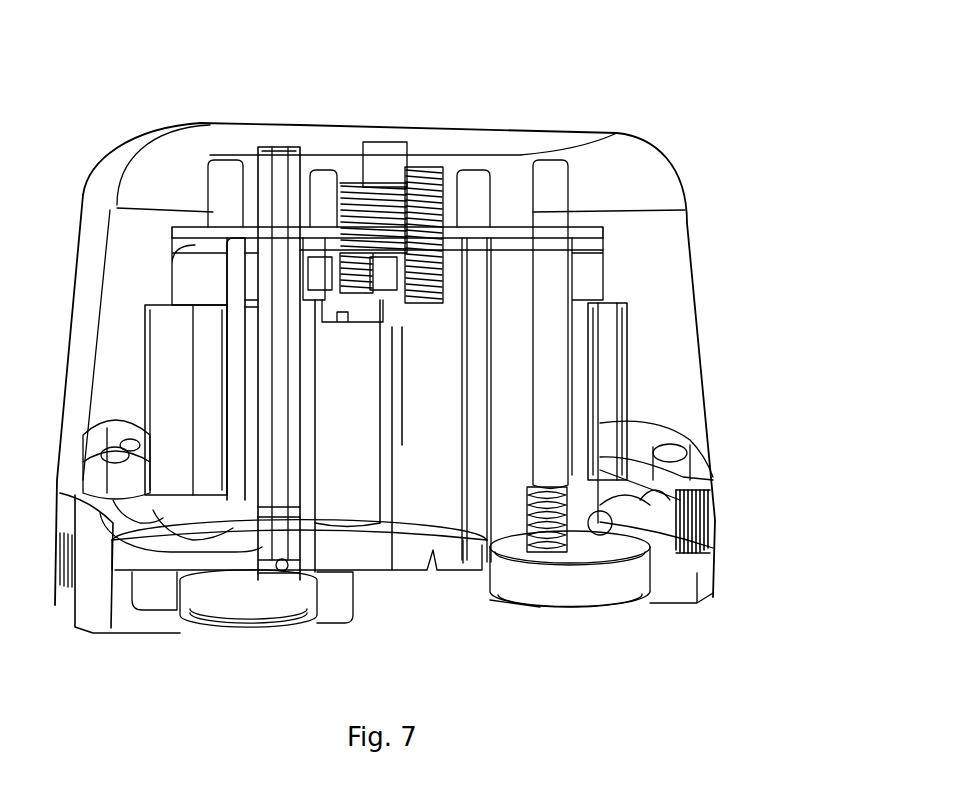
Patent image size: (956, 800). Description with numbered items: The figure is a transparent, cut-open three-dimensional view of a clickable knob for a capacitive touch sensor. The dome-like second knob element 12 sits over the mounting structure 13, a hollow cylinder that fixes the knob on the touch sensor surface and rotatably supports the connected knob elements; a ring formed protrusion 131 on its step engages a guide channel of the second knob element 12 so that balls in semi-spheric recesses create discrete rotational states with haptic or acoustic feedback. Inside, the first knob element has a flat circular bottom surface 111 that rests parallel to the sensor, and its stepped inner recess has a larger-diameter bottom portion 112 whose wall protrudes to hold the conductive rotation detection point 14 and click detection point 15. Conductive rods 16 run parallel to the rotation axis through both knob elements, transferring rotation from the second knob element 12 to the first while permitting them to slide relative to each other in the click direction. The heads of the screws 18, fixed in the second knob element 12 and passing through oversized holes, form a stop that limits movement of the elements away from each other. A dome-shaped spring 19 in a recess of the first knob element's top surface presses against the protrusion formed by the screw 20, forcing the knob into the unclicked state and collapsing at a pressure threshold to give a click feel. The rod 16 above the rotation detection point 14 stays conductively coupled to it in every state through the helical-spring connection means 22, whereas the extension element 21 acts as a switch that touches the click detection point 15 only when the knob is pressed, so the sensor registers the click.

The second knob element 12 is at (637, 170).
The mounting structure 13 is at (700, 493).
The ring formed protrusion 131 is at (673, 457).
The rotation detection point 14 is at (607, 590).
The click detection point 15 is at (243, 623).
The rod 16 is at (325, 183).
The screw 18 is at (405, 330).
The dome-shaped spring 19 is at (430, 170).
The screw 20 is at (377, 250).
The extension element 21 is at (283, 543).
The connection means 22 is at (543, 530).
The bottom surface 111 is at (147, 630).
The bottom portion 112 is at (473, 572).